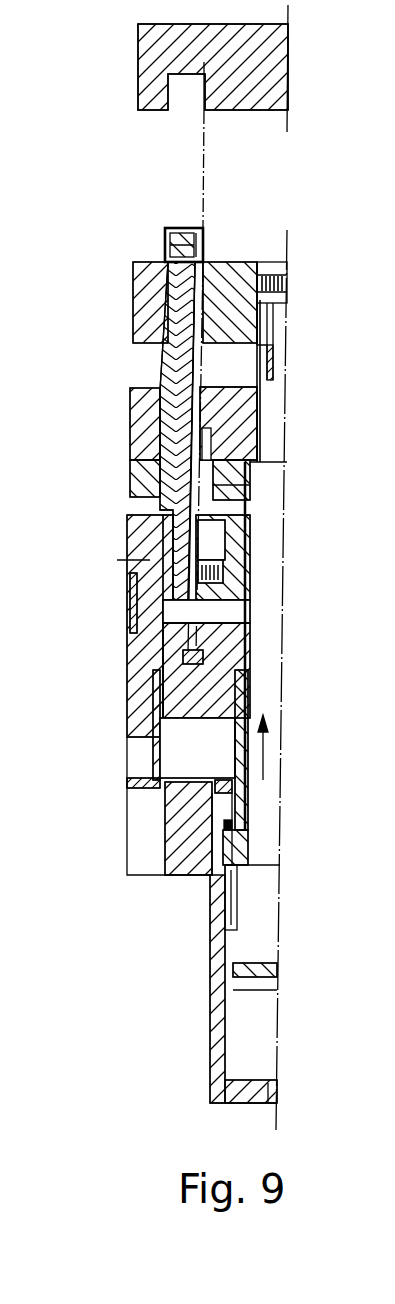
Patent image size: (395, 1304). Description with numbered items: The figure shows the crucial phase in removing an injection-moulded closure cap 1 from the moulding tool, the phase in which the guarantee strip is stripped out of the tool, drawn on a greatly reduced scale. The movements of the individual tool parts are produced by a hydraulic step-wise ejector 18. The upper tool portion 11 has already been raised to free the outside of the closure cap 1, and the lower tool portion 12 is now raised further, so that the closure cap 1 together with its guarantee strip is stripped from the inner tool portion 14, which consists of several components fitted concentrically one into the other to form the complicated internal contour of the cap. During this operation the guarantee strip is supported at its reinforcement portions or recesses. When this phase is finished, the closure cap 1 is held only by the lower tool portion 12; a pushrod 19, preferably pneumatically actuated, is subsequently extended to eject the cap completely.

The upper tool portion 11 is at (152, 74).
The closure cap 1 is at (190, 230).
The pushrod 19 is at (205, 232).
The lower tool portion 12 is at (133, 318).
The inner tool portion 14 is at (135, 428).
The hydraulic step-wise ejector 18 is at (270, 503).